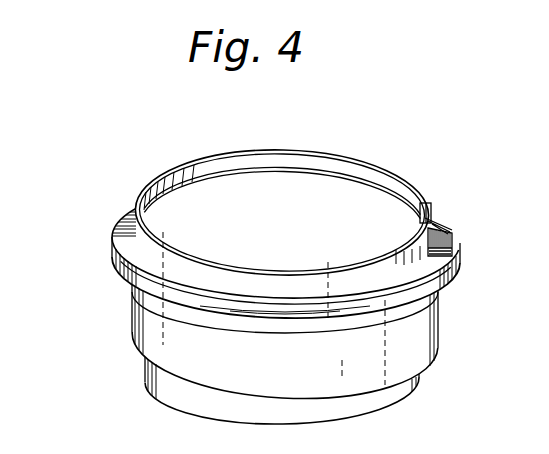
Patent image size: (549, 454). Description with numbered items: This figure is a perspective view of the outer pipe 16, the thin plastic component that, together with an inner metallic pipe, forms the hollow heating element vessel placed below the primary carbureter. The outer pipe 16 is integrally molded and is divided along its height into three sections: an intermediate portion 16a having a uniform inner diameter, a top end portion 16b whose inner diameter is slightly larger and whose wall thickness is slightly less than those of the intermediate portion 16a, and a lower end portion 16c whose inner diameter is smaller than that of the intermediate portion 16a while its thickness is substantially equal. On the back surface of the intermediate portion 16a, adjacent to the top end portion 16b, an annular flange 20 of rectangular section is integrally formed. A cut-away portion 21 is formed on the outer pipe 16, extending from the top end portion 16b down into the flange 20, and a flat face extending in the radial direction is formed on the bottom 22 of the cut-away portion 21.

The outer pipe 16 is at (294, 273).
The intermediate portion 16a is at (142, 322).
The top end portion 16b is at (158, 176).
The lower end portion 16c is at (150, 384).
The annular flange 20 is at (432, 272).
The cut-away portion 21 is at (459, 233).
The bottom of the cutaway portion 22 is at (455, 249).